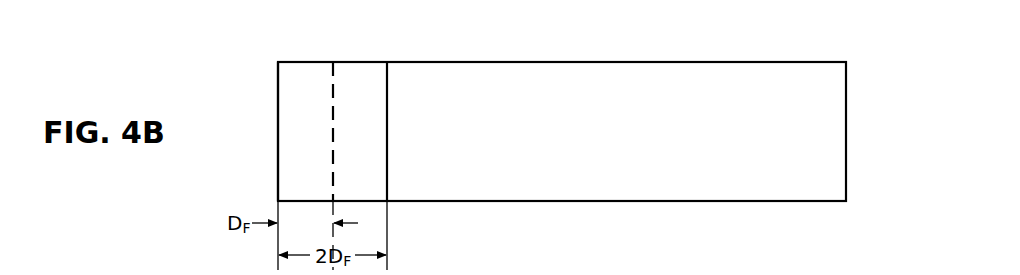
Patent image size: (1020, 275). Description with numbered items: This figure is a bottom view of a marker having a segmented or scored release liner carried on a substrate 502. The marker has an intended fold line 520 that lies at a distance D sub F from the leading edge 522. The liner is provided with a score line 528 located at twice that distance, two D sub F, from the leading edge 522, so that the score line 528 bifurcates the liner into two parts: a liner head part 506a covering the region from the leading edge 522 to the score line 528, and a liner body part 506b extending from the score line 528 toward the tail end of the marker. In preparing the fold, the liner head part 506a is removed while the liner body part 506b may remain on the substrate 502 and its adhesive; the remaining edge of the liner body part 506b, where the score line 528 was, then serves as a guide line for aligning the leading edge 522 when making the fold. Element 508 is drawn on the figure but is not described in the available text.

The substrate 502 is at (529, 85).
The liner head part 506a is at (354, 88).
The liner body part 506b is at (625, 153).
The edge structure 508 is at (262, 126).
The fold line 520 is at (333, 96).
The leading edge 522 is at (278, 153).
The score line 528 is at (387, 140).